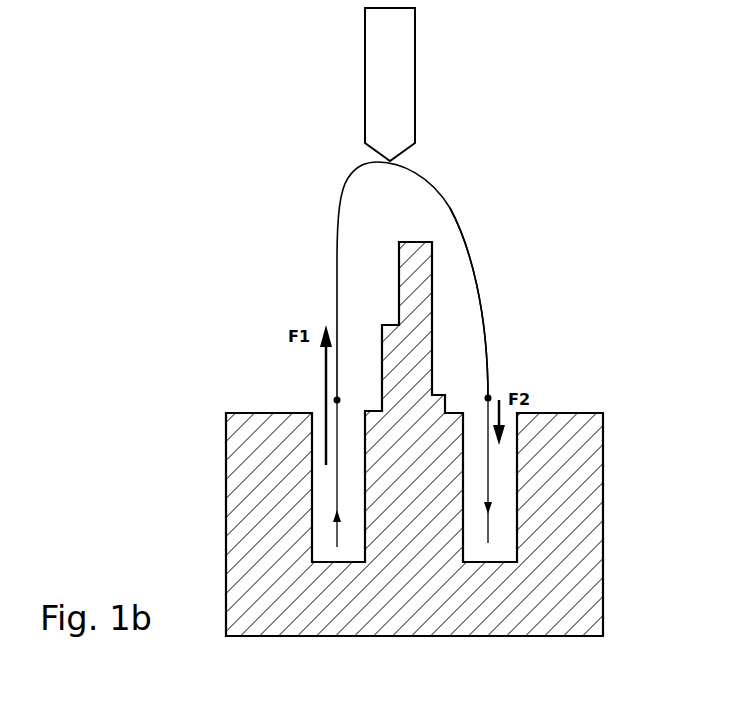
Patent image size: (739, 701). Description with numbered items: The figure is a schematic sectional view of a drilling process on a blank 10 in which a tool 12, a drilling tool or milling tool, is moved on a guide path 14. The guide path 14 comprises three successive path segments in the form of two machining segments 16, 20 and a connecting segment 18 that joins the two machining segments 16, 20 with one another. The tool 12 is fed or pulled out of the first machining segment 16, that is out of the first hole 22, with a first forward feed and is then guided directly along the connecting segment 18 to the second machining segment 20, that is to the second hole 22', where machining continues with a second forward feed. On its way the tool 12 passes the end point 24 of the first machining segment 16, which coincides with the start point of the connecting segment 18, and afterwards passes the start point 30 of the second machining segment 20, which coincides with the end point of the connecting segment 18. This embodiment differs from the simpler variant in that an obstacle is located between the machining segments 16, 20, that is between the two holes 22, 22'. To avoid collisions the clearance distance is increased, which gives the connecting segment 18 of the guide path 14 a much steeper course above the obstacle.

The substrate / base body 10 is at (557, 568).
The tool 12 is at (383, 90).
The guide path 14 is at (448, 185).
The first machining segment 16 is at (337, 492).
The connecting segment 18 is at (472, 260).
The second machining segment 20 is at (492, 477).
The first hole 22 is at (246, 544).
The second hole 22' is at (580, 537).
The end point of the first machining segment 24 is at (335, 399).
The start point of the second machining segment 30 is at (490, 396).